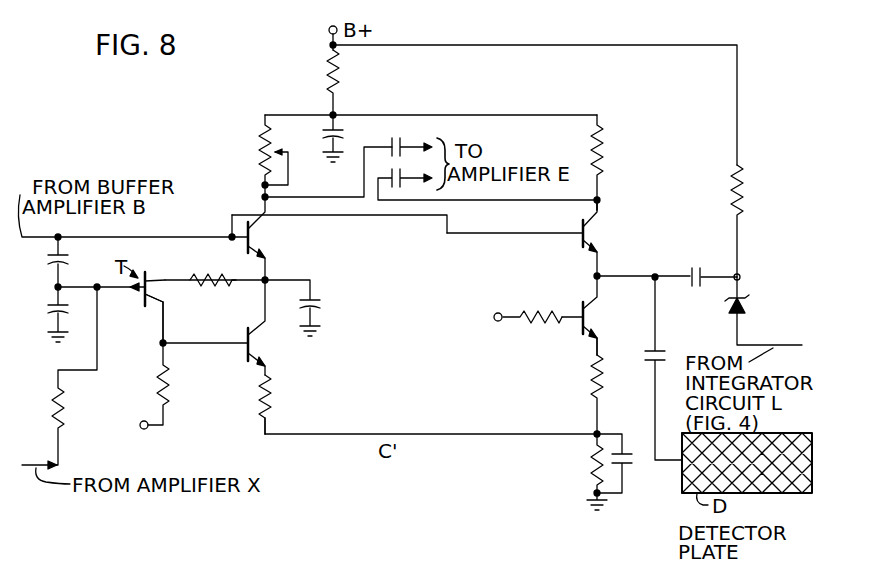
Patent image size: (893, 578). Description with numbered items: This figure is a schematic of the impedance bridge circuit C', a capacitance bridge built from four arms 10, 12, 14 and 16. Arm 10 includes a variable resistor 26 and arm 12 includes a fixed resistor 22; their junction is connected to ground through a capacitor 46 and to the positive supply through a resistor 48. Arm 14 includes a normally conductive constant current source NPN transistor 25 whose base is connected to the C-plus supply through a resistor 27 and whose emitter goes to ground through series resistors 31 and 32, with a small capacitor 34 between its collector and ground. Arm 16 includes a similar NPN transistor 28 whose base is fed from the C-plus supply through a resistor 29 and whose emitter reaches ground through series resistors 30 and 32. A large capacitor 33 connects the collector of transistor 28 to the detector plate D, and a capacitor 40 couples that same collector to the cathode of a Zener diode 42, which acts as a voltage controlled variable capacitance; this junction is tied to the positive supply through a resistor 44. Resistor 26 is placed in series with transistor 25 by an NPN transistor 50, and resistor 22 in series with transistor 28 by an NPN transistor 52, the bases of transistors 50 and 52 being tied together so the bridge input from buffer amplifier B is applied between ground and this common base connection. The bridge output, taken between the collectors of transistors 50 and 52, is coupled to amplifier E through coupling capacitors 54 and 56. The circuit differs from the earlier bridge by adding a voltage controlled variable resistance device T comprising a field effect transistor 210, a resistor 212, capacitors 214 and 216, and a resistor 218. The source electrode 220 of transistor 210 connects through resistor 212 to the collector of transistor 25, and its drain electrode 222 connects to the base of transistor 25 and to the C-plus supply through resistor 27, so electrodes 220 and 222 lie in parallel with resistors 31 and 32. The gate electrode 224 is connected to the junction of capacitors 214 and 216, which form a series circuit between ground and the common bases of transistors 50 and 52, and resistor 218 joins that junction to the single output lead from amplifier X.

The bridge arm 10 is at (243, 172).
The bridge arm 12 is at (622, 176).
The bridge arm 14 is at (245, 397).
The bridge arm 16 is at (568, 338).
The fixed resistor 22 is at (604, 140).
The NPN transistor 25 is at (265, 352).
The variable resistor 26 is at (262, 154).
The resistor 27 is at (160, 400).
The NPN transistor 28 is at (579, 314).
The resistor 29 is at (525, 310).
The resistor 30 is at (590, 382).
The resistor 31 is at (273, 386).
The resistor 32 is at (590, 467).
The large capacitor 33 is at (665, 350).
The small capacitor 34 is at (318, 307).
The large capacitor 40 is at (693, 270).
The Zener diode 42 is at (746, 310).
The resistor 44 is at (743, 188).
The capacitor 46 is at (324, 134).
The resistor 48 is at (341, 68).
The NPN transistor 50 is at (258, 236).
The NPN transistor 52 is at (590, 233).
The coupling capacitor 54 is at (392, 146).
The coupling capacitor 56 is at (487, 176).
The field effect transistor 210 is at (146, 271).
The resistor 212 is at (214, 286).
The capacitor 214 is at (52, 256).
The capacitor 216 is at (52, 303).
The resistor 218 is at (62, 406).
The source electrode 220 is at (178, 276).
The drain electrode 222 is at (156, 318).
The gate electrode 224 is at (122, 288).